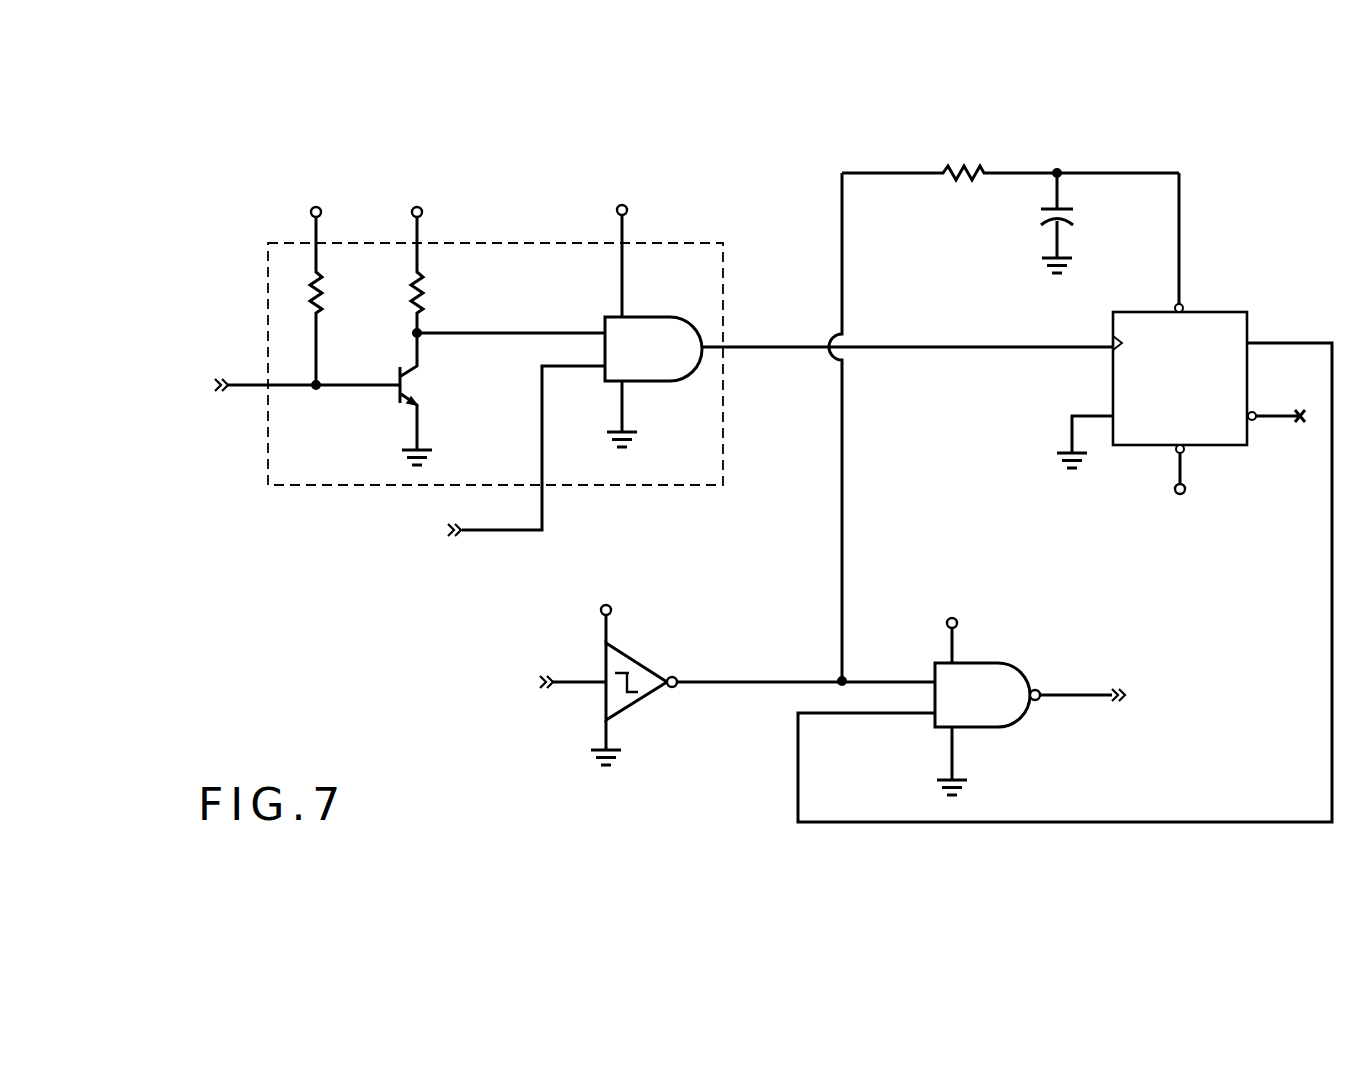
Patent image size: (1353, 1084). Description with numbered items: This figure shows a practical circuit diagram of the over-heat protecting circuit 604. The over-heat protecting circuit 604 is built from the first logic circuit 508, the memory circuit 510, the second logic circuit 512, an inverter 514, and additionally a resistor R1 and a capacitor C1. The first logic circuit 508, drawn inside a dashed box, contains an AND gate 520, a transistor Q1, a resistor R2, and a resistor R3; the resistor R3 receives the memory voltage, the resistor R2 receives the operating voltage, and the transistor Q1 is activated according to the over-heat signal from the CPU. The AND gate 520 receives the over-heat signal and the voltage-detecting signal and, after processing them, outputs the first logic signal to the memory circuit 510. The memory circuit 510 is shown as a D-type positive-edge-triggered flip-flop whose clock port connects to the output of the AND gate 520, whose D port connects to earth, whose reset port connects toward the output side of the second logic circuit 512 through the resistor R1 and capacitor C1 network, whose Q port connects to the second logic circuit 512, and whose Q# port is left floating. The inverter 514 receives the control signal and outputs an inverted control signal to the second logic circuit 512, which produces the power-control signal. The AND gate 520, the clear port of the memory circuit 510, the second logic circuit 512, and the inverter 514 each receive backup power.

The over-heat protecting circuit 604 is at (167, 150).
The first logic circuit 508 is at (673, 241).
The AND gate 520 is at (645, 313).
The memory circuit 510 is at (1207, 311).
The inverter 514 is at (628, 656).
The second logic circuit 512 is at (970, 661).
The resistor R1 is at (1010, 162).
The resistor R2 is at (431, 270).
The resistor R3 is at (330, 296).
The capacitor C1 is at (1072, 222).
The transistor Q1 is at (423, 399).